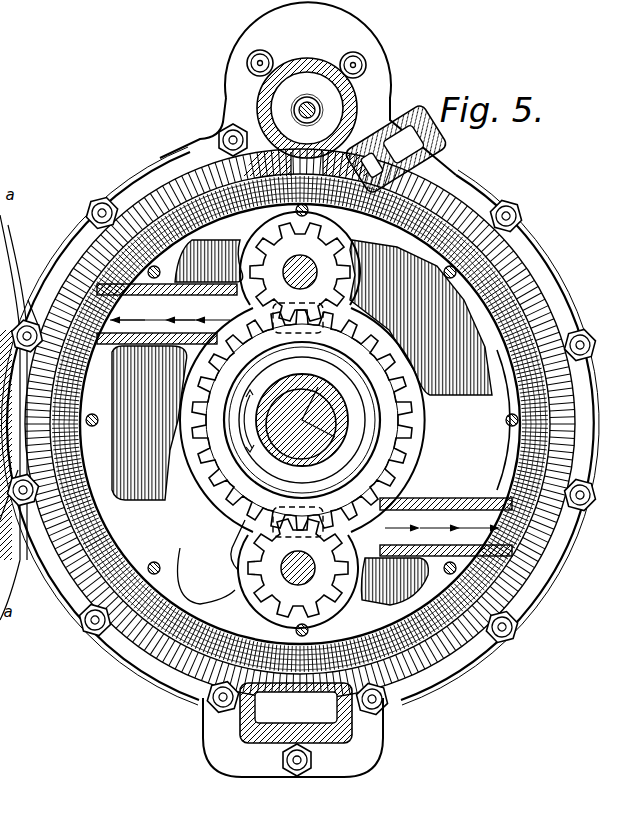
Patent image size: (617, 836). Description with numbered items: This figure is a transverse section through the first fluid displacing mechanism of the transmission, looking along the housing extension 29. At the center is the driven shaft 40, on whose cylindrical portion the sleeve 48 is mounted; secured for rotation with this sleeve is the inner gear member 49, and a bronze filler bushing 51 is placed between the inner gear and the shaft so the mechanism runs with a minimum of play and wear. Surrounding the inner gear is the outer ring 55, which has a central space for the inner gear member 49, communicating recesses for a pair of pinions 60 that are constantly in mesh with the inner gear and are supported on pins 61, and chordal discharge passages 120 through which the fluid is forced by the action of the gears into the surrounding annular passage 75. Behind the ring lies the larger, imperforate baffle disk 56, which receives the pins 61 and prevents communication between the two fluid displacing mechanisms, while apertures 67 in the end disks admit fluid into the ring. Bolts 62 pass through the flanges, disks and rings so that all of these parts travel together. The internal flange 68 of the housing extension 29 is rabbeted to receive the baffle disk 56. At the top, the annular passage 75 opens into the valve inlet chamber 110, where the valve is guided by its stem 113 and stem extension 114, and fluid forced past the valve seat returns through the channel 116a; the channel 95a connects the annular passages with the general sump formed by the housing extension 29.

The housing extension 29 is at (130, 655).
The driven shaft 40 is at (280, 462).
The sleeve 48 is at (282, 440).
The inner gear member 49 is at (400, 392).
The bronze filler bushing 51 is at (305, 388).
The outer ring 55 is at (386, 223).
The baffle disk 56 is at (492, 285).
The pinions 60 is at (290, 238).
The pins 61 is at (299, 262).
The bolts 62 is at (506, 421).
The apertures 67 is at (300, 502).
The internal flange 68 is at (212, 166).
The annular passage 75 is at (185, 655).
The channel 95a is at (320, 722).
The valve inlet chamber 110 is at (332, 100).
The valve stem 113 is at (303, 98).
The stem extension 114 is at (307, 119).
The channel 116a is at (405, 156).
The chordal discharge passages 120 is at (165, 297).